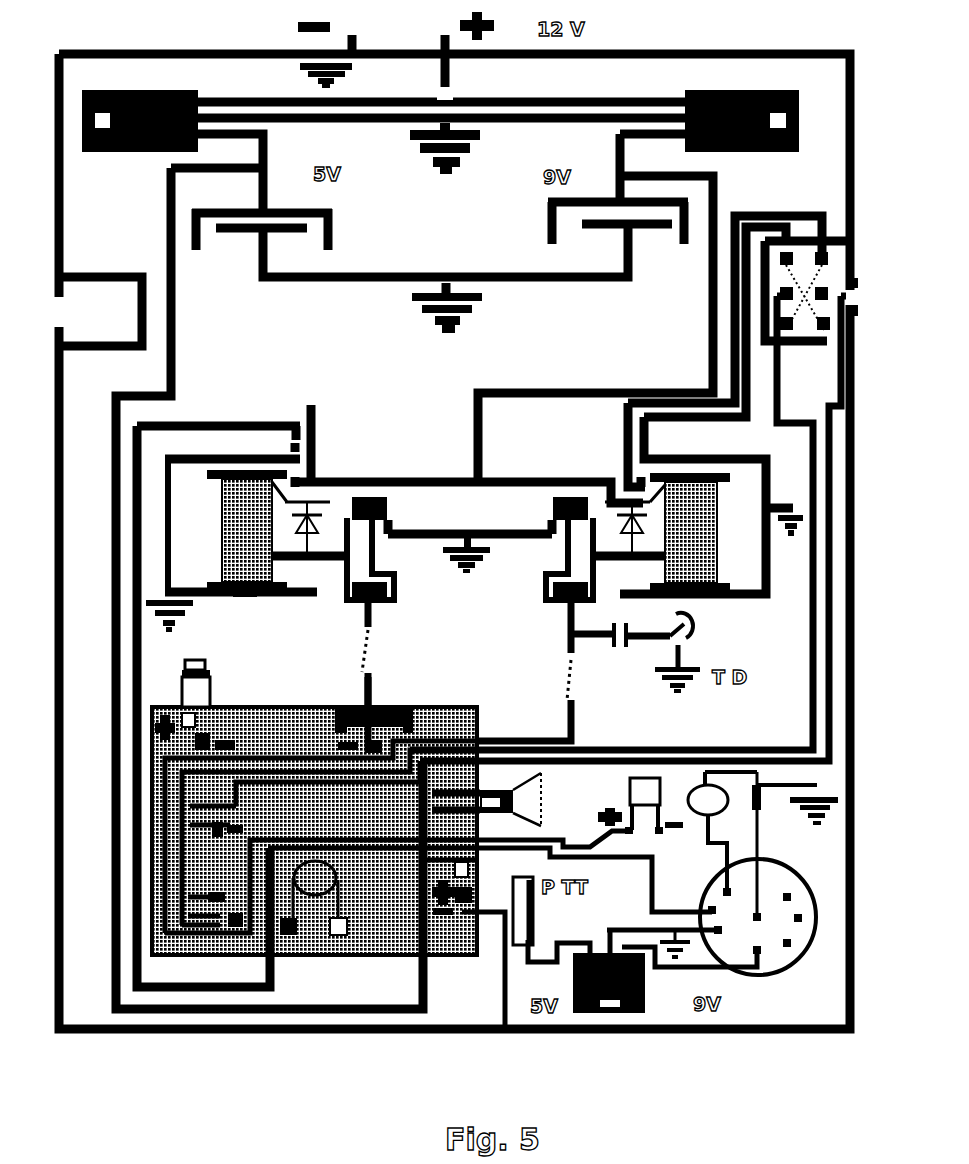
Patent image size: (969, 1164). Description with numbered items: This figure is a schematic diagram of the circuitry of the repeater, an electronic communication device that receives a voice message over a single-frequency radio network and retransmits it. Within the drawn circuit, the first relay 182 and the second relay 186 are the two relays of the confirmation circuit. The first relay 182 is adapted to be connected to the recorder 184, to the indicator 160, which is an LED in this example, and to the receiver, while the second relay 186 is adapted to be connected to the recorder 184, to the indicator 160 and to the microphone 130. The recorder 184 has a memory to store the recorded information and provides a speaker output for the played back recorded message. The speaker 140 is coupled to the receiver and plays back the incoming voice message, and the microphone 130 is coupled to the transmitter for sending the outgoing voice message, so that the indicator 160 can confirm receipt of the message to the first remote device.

The first relay 182 is at (272, 594).
The second relay 186 is at (745, 598).
The indicator 160 is at (660, 780).
The speaker 140 is at (440, 790).
The microphone 130 is at (340, 872).
The recorder 184 is at (482, 844).